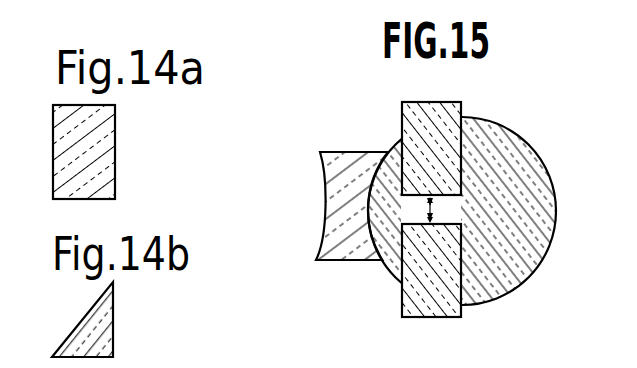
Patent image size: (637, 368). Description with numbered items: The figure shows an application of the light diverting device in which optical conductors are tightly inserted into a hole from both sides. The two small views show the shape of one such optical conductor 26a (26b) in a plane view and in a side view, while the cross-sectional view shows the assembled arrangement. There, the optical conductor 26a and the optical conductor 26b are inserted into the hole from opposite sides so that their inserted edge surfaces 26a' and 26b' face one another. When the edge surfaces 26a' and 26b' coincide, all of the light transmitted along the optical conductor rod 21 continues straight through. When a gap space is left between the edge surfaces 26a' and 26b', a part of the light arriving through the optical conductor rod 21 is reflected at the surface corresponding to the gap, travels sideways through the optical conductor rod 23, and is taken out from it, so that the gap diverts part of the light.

In FIG. 15, the optical conductor rod 21 is at (502, 296).
In FIG. 15, the optical conductor rod 23 is at (335, 255).
In FIG. 14a, the optical conductor 26a is at (142, 152).
In FIG. 14b, the optical conductor 26a is at (138, 319).
In FIG. 15, the optical conductor 26a is at (398, 143).
In FIG. 14a, the optical conductor 26b is at (142, 152).
In FIG. 14b, the optical conductor 26b is at (138, 319).
In FIG. 15, the optical conductor 26b is at (398, 283).
In FIG. 15, the inserted edge surface 26a' is at (461, 187).
In FIG. 15, the inserted edge surface 26b' is at (462, 228).